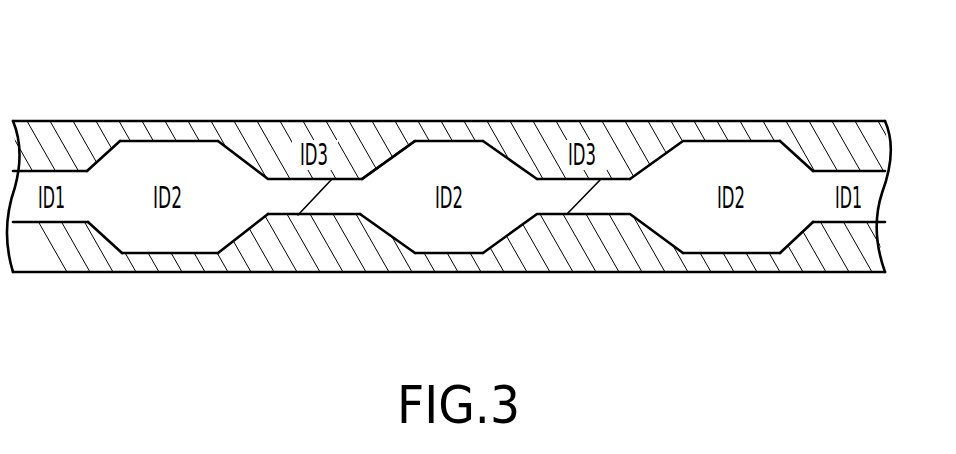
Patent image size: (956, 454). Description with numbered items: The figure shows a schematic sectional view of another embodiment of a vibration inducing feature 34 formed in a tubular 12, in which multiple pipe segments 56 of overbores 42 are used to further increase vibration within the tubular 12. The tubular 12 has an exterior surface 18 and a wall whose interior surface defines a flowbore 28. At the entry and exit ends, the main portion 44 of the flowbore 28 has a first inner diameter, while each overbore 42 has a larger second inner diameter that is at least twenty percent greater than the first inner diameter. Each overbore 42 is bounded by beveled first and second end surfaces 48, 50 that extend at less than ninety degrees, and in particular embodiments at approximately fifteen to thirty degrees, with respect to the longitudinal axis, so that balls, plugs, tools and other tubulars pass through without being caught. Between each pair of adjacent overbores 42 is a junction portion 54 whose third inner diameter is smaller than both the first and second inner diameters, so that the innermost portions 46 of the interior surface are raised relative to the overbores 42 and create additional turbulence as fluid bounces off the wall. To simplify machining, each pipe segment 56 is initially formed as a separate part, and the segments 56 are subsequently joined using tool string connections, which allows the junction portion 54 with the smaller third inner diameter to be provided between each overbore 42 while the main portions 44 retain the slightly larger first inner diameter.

The tubular 12 is at (122, 272).
The exterior surface 18 is at (227, 122).
The flowbore 28 is at (682, 170).
The vibration inducing feature 34 is at (190, 158).
The overbores 42 is at (126, 158).
The main portion 44 is at (832, 143).
The innermost portions 46 is at (615, 188).
The first end surface 48 is at (388, 150).
The second end surface 50 is at (510, 150).
The junction portion 54 is at (330, 214).
The pipe segments 56 is at (180, 253).